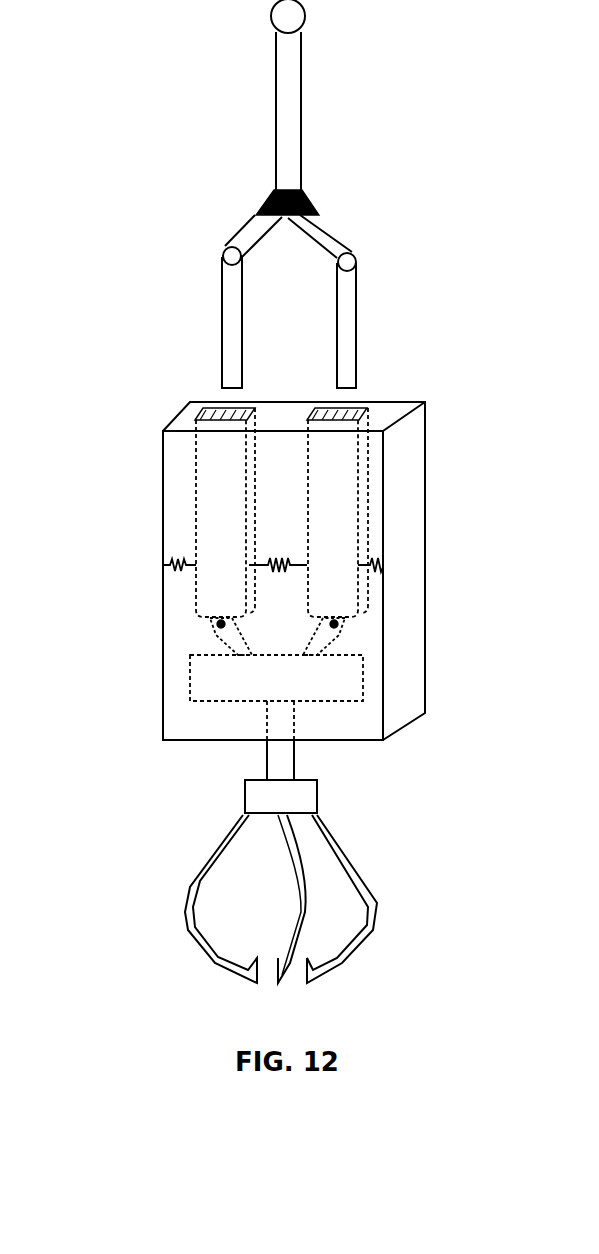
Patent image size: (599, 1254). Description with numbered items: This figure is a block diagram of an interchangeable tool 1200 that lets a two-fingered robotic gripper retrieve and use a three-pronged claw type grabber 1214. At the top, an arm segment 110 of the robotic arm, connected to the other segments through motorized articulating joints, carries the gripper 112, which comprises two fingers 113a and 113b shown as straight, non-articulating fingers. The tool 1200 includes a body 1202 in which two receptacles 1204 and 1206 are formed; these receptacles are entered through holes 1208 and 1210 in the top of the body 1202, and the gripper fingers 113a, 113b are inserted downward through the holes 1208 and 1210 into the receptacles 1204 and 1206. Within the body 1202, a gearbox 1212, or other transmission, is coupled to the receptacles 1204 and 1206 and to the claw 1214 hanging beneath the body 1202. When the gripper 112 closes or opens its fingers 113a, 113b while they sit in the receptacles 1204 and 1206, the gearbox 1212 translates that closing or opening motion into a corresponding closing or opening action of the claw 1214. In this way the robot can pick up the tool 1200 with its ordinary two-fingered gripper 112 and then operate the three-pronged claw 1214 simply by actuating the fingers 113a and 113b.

The arm segment 110 is at (303, 100).
The gripper 112 is at (333, 228).
The finger 113a is at (220, 318).
The finger 113b is at (357, 318).
The interchangeable tool 1200 is at (130, 403).
The body 1202 is at (163, 487).
The receptacle 1204 is at (196, 515).
The receptacle 1206 is at (363, 498).
The hole 1208 is at (205, 412).
The hole 1210 is at (327, 412).
The gearbox 1212 is at (188, 673).
The three-pronged claw type grabber 1214 is at (155, 780).